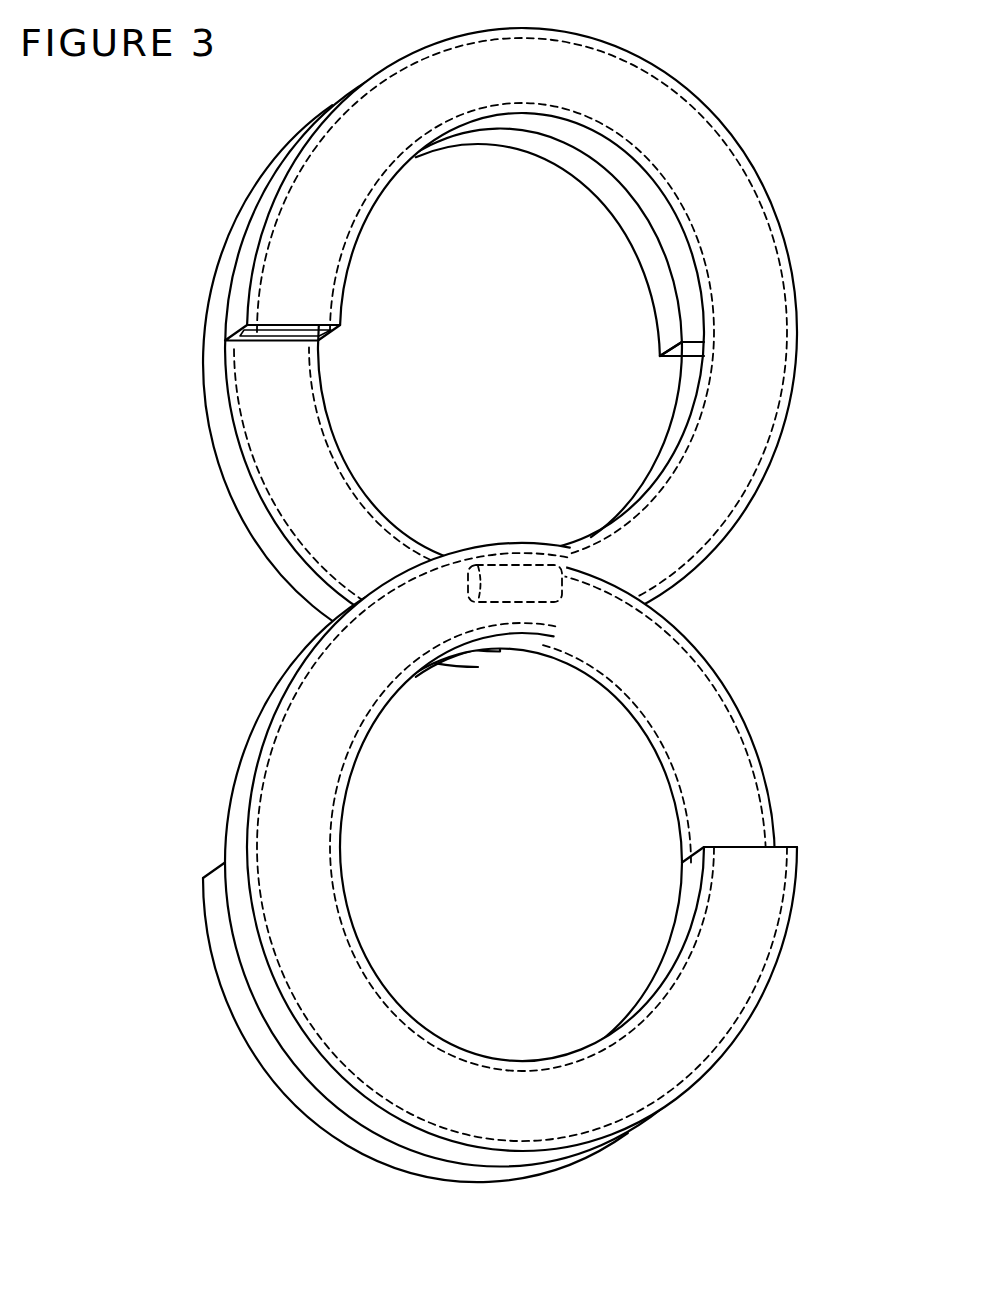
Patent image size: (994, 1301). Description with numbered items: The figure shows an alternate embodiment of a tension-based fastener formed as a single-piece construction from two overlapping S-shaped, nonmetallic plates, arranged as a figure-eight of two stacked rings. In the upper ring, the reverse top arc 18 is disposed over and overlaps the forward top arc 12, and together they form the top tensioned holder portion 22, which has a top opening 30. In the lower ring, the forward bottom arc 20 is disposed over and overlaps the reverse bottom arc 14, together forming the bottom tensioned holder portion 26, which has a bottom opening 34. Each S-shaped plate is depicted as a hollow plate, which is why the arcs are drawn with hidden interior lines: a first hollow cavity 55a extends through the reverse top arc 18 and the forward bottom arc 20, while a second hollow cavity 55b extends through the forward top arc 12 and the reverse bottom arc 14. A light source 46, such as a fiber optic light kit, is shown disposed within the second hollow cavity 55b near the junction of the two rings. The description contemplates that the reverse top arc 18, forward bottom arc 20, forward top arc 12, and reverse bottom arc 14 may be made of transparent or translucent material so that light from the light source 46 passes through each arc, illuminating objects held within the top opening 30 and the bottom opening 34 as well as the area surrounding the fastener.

The forward top arc 12 is at (585, 187).
The reverse bottom arc 14 is at (203, 878).
The reverse top arc 18 is at (722, 117).
The forward bottom arc 20 is at (753, 1015).
The top tensioned holder portion 22 is at (452, 347).
The bottom tensioned holder portion 26 is at (449, 862).
The top opening 30 is at (572, 297).
The bottom opening 34 is at (582, 840).
The light source 46 is at (518, 604).
The first hollow cavity 55a is at (235, 340).
The second hollow cavity 55b is at (678, 357).